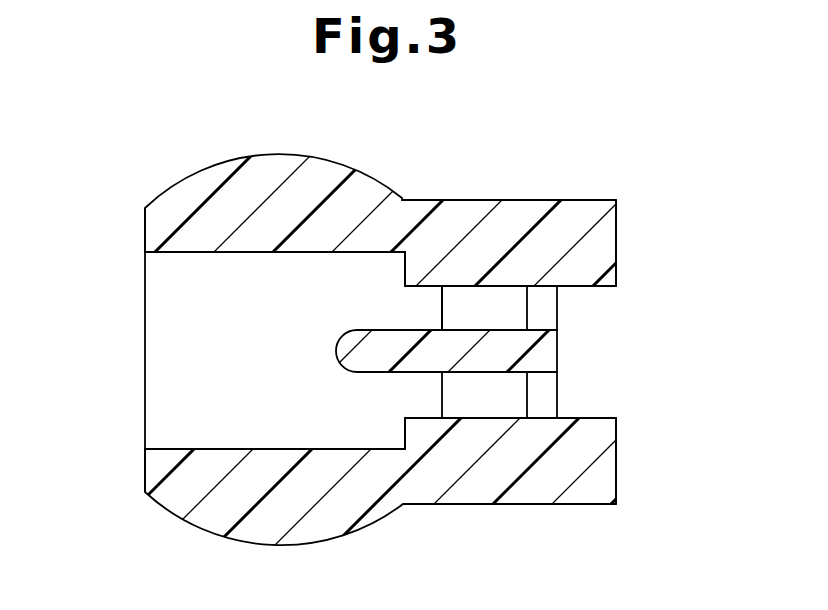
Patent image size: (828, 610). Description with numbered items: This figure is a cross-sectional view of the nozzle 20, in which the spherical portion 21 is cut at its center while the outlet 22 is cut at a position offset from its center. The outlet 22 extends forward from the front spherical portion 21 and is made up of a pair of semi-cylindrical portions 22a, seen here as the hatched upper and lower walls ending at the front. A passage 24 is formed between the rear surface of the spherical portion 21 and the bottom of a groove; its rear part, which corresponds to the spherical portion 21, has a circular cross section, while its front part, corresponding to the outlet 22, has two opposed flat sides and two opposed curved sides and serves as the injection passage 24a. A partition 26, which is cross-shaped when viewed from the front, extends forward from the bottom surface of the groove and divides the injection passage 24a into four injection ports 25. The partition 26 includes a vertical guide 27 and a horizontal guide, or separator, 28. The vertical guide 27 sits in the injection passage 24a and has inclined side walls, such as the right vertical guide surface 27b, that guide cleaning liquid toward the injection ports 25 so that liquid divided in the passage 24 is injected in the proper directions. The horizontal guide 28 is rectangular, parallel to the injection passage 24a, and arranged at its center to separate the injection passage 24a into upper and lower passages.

The nozzle 20 is at (371, 179).
The spherical portion 21 is at (268, 157).
The outlet 22 is at (515, 207).
The semi-cylindrical portion 22a is at (617, 222).
The passage 24 is at (168, 449).
The injection passage 24a is at (480, 407).
The injection port 25 is at (548, 288).
The partition 26 is at (632, 312).
The vertical guide 27 is at (555, 316).
The right vertical guide surface 27b is at (445, 304).
The horizontal guide 28 is at (548, 353).